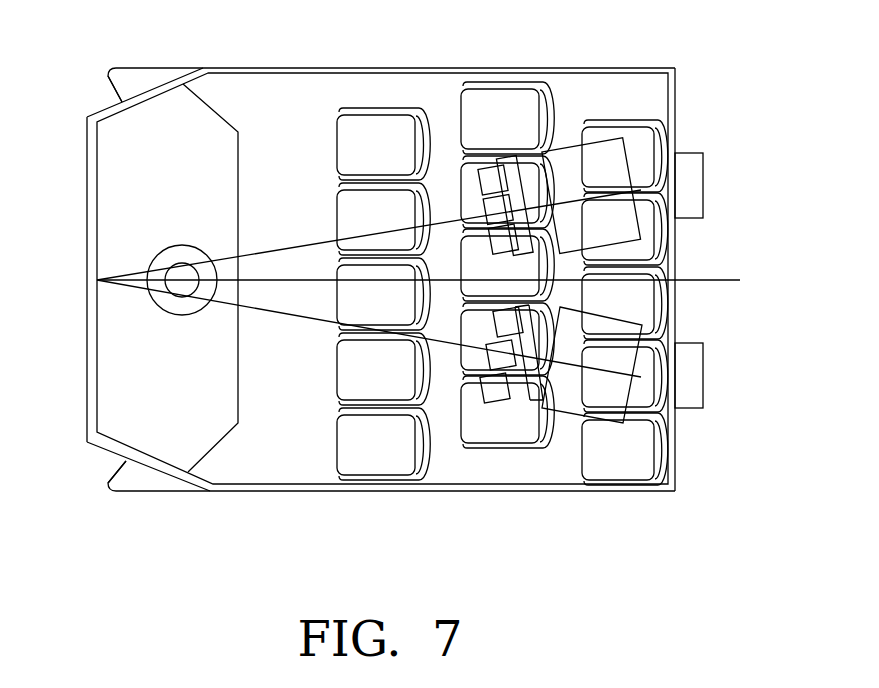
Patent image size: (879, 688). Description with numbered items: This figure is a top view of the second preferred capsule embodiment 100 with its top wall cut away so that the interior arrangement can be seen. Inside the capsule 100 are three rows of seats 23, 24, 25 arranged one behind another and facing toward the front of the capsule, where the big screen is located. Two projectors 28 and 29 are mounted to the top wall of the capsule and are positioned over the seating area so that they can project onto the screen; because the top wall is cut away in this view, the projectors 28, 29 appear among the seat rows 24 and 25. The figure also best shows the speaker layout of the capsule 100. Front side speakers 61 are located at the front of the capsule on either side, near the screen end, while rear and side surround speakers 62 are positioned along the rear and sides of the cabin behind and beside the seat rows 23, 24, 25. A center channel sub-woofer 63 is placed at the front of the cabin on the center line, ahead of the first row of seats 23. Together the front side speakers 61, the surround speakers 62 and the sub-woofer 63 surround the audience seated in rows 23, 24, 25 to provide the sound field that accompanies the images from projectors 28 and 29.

The capsule embodiment 100 is at (688, 90).
The front side speakers 61 is at (147, 76).
The rear and side surround speakers 62 is at (703, 153).
The center channel sub-woofer 63 is at (165, 310).
The row of seats 23 is at (388, 470).
The row of seats 24 is at (473, 433).
The row of seats 25 is at (625, 470).
The projector 28 is at (575, 400).
The projector 29 is at (568, 165).